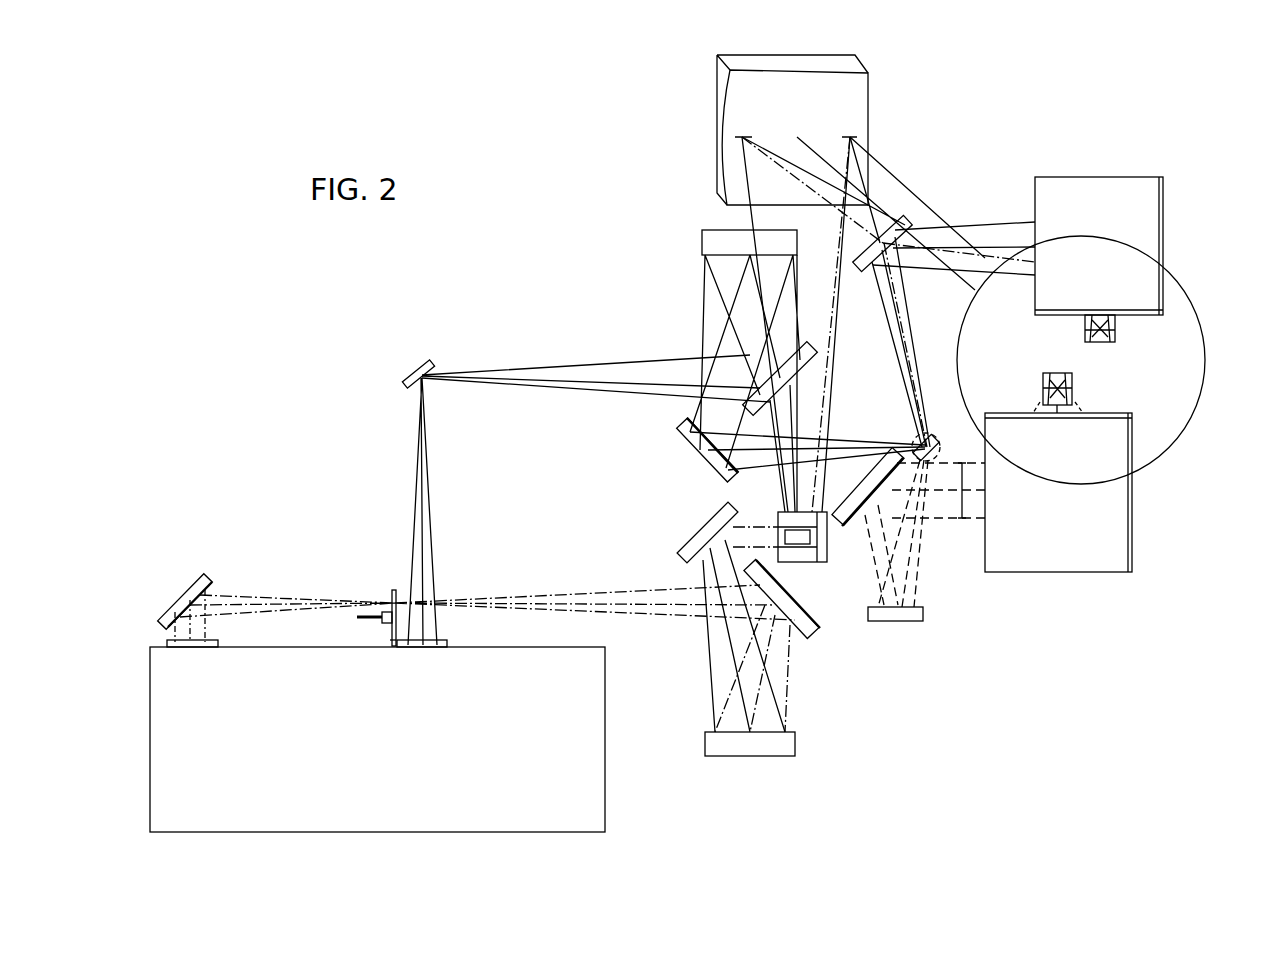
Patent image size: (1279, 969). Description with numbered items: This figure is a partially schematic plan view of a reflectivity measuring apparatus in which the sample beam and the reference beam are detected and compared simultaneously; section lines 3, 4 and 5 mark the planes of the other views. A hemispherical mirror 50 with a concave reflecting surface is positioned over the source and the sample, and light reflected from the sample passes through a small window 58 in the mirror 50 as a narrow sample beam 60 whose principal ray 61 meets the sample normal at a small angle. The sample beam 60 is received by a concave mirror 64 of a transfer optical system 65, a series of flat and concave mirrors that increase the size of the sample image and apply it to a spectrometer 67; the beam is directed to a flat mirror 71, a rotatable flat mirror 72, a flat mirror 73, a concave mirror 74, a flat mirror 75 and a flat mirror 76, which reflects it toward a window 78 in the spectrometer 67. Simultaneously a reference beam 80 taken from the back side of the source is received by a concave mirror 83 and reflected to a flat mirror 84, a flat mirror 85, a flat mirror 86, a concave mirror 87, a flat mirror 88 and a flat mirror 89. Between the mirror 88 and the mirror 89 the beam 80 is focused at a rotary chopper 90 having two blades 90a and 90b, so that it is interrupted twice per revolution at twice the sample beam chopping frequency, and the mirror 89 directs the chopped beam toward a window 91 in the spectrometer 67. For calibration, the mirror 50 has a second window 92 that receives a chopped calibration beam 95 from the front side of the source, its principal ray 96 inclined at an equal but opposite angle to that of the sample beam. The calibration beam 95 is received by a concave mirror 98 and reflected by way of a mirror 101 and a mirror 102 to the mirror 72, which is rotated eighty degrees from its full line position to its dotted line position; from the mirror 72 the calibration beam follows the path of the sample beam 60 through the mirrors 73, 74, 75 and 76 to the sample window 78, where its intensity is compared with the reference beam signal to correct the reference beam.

The section line 3- 3 is at (265, 500).
The section line 4- 4 is at (797, 40).
The section line 5- 5 is at (934, 356).
The hemispherical mirror 50 is at (1176, 432).
The window 58 is at (1110, 342).
The sample beam 60 is at (982, 260).
The principal ray 61 is at (1112, 324).
The concave mirror 64 is at (1122, 177).
The transfer optical system 65 is at (651, 203).
The spectrometer 67 is at (605, 764).
The flat mirror 71 is at (862, 270).
The rotatable flat mirror 72 is at (932, 440).
The flat mirror 73 is at (696, 450).
The concave mirror 74 is at (702, 250).
The flat mirror 75 is at (806, 366).
The flat mirror 76 is at (411, 368).
The window 78 is at (445, 642).
The reference beam 80 is at (888, 200).
The concave mirror 83 is at (860, 68).
The flat mirror 84 is at (810, 520).
The flat mirror 85 is at (822, 562).
The flat mirror 86 is at (700, 530).
The concave mirror 87 is at (752, 757).
The flat mirror 88 is at (812, 618).
The flat mirror 89 is at (186, 590).
The rotary chopper 90 is at (358, 620).
The blade 90a is at (392, 594).
The blade 90b is at (392, 642).
The window 91 is at (218, 645).
The window 92 is at (1072, 383).
The calibration beam 95 is at (1060, 392).
The principal ray 96 is at (1044, 396).
The concave mirror 98 is at (1132, 560).
The mirror 101 is at (878, 468).
The mirror 102 is at (910, 621).